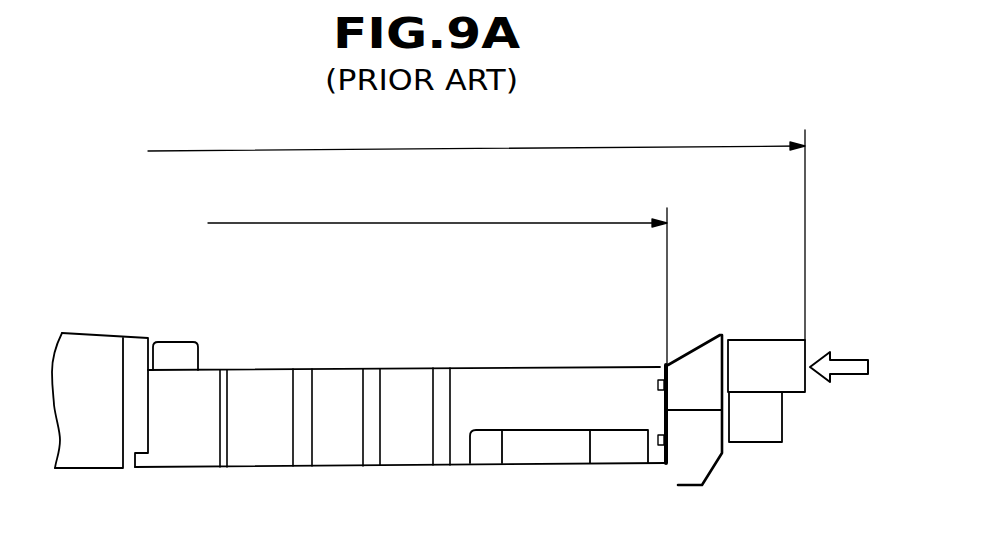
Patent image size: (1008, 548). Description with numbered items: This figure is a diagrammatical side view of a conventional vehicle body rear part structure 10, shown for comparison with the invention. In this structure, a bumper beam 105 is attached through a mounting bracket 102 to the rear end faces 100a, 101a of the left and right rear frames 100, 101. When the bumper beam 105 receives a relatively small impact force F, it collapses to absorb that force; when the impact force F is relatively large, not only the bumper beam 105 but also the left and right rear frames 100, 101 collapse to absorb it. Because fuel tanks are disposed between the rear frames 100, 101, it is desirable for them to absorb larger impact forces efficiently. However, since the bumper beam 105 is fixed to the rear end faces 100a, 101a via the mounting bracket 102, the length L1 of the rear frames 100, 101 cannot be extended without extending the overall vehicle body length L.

The connector assembly 10 is at (202, 283).
The left rear frame 100 is at (358, 368).
The right rear frame 101 is at (333, 367).
The rear end face 100a is at (596, 450).
The rear end face 101a is at (668, 418).
The mounting bracket 102 is at (717, 468).
The bumper beam 105 is at (758, 343).